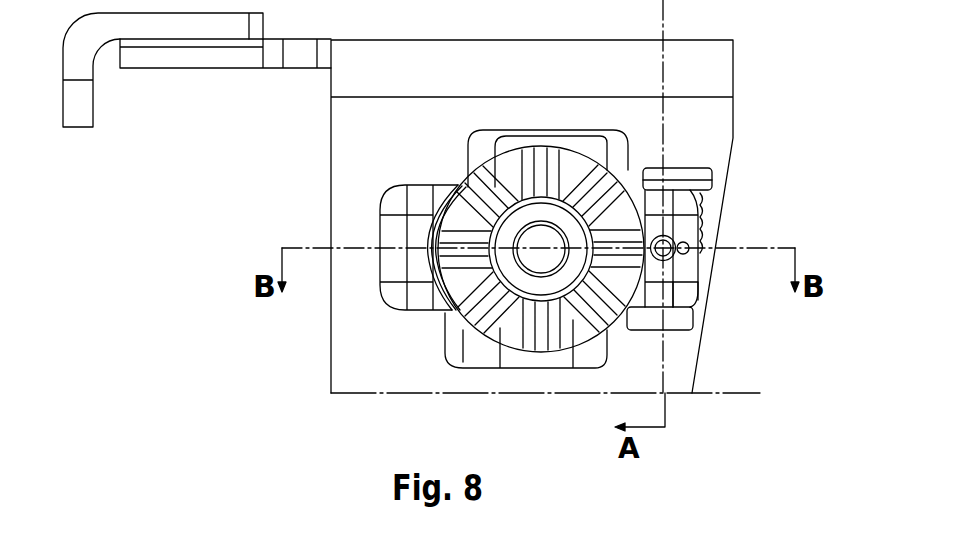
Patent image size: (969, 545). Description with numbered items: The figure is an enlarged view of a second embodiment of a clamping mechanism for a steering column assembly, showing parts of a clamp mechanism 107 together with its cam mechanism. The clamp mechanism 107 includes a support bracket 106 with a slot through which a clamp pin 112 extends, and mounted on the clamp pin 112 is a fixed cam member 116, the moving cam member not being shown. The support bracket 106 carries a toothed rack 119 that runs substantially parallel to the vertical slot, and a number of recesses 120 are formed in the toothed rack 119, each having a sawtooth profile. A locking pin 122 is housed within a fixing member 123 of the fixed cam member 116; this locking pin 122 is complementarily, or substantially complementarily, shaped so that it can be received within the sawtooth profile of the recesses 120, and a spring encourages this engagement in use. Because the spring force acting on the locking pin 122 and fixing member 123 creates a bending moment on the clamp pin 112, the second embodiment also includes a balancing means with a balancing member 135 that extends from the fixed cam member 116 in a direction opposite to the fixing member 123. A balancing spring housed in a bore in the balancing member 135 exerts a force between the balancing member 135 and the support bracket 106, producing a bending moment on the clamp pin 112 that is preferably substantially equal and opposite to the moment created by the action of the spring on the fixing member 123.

The support bracket 106 is at (373, 153).
The clamp mechanism 107 is at (488, 313).
The clamp pin 112 is at (482, 265).
The fixed cam member 116 is at (623, 308).
The toothed rack 119 is at (703, 167).
The recesses 120 is at (712, 207).
The locking pin 122 is at (685, 267).
The fixing member 123 is at (682, 297).
The balancing member 135 is at (415, 228).